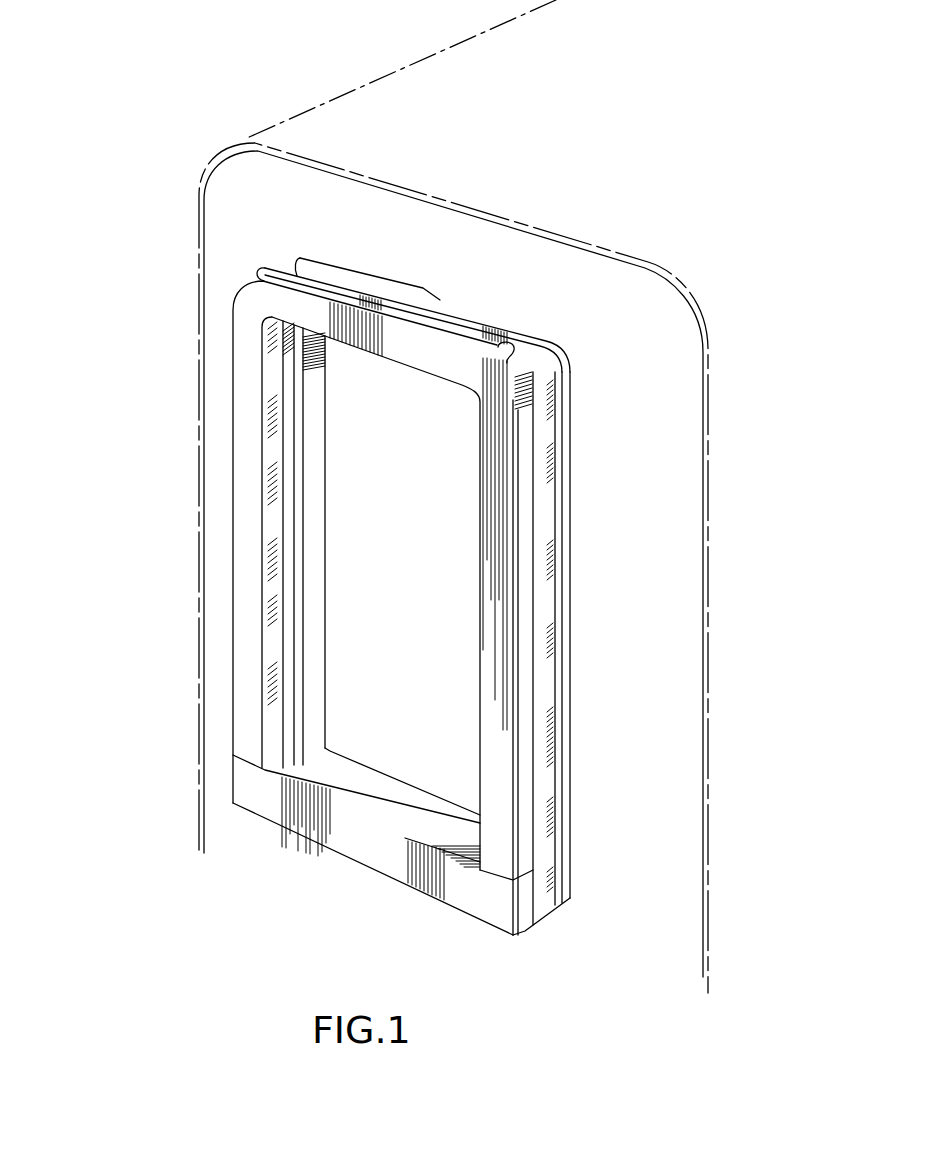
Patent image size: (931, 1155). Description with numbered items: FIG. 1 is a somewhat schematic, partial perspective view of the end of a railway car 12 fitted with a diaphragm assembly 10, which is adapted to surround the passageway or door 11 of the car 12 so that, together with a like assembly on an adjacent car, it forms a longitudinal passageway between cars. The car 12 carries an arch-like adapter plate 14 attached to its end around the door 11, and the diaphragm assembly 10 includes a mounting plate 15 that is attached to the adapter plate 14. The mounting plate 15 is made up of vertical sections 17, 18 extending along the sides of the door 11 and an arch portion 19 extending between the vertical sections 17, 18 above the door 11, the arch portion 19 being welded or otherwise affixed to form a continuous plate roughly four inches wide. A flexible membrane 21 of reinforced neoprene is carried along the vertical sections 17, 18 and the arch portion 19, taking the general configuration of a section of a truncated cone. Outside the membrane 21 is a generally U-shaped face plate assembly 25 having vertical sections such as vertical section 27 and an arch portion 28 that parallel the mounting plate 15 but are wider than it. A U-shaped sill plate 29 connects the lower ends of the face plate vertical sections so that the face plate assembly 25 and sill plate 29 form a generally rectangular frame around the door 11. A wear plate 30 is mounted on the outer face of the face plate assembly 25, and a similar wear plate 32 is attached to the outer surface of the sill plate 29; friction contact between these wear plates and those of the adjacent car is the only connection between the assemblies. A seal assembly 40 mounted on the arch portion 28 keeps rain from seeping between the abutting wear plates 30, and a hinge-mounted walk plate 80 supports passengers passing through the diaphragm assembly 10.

The diaphragm assembly 10 is at (243, 348).
The door 11 is at (402, 596).
The car 12 is at (360, 110).
The adapter plate 14 is at (570, 577).
The mounting plate 15 is at (573, 475).
The vertical section 17 is at (312, 503).
The vertical section 18 is at (560, 747).
The arch portion 19 is at (457, 310).
The flexible membrane 21 is at (543, 538).
The face plate assembly 25 is at (535, 677).
The vertical section 27 is at (520, 633).
The arch portion 28 is at (507, 363).
The sill plate 29 is at (525, 914).
The wear plate 30 is at (500, 805).
The wear plate 32 is at (362, 845).
The seal assembly 40 is at (280, 267).
The walk plate 80 is at (352, 790).